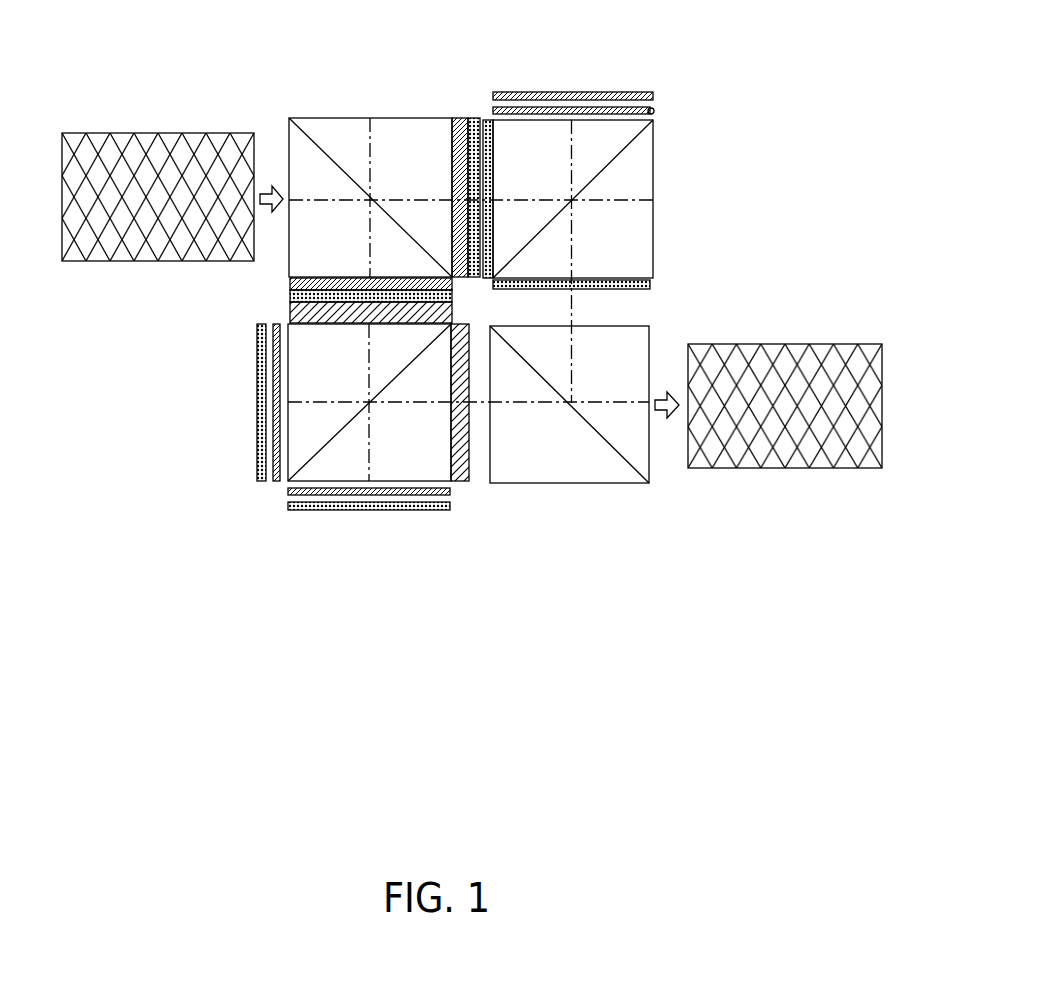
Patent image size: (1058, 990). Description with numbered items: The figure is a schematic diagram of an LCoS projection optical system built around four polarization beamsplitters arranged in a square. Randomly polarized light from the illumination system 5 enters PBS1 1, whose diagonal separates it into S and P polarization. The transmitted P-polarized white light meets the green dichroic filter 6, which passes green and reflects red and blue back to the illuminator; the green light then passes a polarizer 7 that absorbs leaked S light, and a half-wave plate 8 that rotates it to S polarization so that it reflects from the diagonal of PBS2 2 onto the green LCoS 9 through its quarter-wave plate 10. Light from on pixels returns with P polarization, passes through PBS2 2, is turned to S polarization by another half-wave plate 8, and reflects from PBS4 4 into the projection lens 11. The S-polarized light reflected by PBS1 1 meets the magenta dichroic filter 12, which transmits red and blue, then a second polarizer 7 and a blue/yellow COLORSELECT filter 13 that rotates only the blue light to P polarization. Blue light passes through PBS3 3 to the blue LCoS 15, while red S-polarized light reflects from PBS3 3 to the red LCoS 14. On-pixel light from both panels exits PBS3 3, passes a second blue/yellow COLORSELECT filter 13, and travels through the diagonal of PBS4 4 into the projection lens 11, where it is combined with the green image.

The PBS1 1 is at (335, 137).
The PBS2 2 is at (635, 165).
The PBS3 3 is at (422, 458).
The PBS4 4 is at (628, 350).
The illumination system 5 is at (95, 140).
The green dichroic filter 6 is at (455, 118).
The polarizer 7 is at (473, 118).
The half-wave plate 8 is at (487, 118).
The LCoS (green) 9 is at (633, 98).
The quarter-wave plate 10 is at (654, 113).
The projection lens 11 is at (737, 455).
The magenta dichroic filter 12 is at (295, 285).
The blue/yellow COLORSELECT filter 13 is at (310, 315).
The LCoS (red) 14 is at (257, 457).
The LCoS (blue) 15 is at (301, 507).